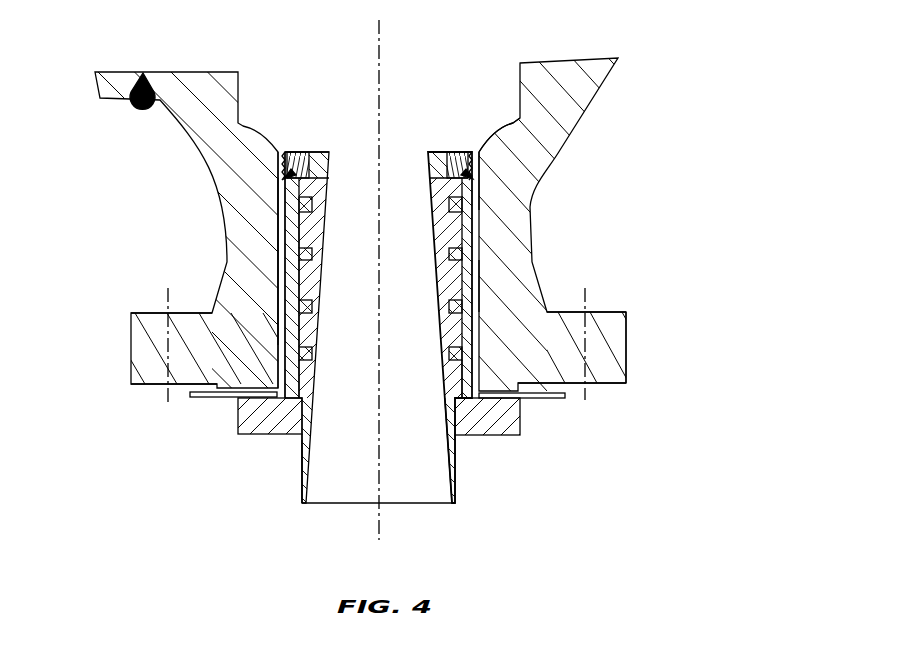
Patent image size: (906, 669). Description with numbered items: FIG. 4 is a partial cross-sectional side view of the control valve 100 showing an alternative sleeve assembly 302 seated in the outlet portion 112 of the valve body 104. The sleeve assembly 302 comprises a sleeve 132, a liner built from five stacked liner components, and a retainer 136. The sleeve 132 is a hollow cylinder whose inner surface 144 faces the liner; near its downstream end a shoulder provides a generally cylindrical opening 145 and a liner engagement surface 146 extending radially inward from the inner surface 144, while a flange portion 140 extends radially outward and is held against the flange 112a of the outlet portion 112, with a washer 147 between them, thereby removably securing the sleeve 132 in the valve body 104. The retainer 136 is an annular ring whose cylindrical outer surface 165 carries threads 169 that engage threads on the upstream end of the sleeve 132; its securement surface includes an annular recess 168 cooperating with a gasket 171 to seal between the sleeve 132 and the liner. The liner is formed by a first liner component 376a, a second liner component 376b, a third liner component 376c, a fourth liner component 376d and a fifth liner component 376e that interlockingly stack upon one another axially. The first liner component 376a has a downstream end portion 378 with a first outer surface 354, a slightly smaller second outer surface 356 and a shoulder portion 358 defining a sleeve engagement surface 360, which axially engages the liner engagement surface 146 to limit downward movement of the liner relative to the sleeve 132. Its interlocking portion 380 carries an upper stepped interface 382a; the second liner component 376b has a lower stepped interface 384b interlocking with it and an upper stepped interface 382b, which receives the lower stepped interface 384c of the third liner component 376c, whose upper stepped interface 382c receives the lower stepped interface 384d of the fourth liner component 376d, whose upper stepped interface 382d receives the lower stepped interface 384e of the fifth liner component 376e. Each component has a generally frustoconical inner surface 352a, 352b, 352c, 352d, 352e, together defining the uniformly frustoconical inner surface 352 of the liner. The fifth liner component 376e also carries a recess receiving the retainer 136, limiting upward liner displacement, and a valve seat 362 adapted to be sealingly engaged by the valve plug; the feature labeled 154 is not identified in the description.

The control valve 100 is at (668, 167).
The valve body 104 is at (612, 75).
The outlet portion 112 is at (198, 152).
The flange 112a is at (614, 384).
The sleeve 132 is at (272, 341).
The retainer 136 is at (457, 150).
The flange portion 140 is at (488, 436).
The inner surface 144 is at (482, 284).
The cylindrical opening 145 is at (450, 420).
The liner engagement surface 146 is at (278, 390).
The washer 147 is at (566, 400).
The flange shoulder 154 is at (278, 320).
The outer surface 165 is at (281, 150).
The annular recess 168 is at (305, 162).
The threads 169 is at (486, 152).
The gasket 171 is at (482, 180).
The sleeve assembly 302 is at (528, 446).
The inner surface 352 is at (323, 418).
The frustoconical inner surface 352a is at (311, 455).
The frustoconical inner surface 352b is at (312, 352).
The frustoconical inner surface 352c is at (312, 306).
The frustoconical inner surface 352d is at (312, 252).
The frustoconical inner surface 352e is at (330, 165).
The first outer surface 354 is at (482, 370).
The second outer surface 356 is at (298, 490).
The shoulder portion 358 is at (482, 380).
The sleeve engagement surface 360 is at (521, 421).
The valve seat 362 is at (388, 148).
The first liner component 376a is at (298, 445).
The second liner component 376b is at (283, 300).
The third liner component 376c is at (283, 253).
The fourth liner component 376d is at (283, 215).
The fifth liner component 376e is at (283, 190).
The downstream end portion 378 is at (313, 500).
The interlocking portion 380 is at (458, 376).
The upper stepped interface 382a is at (452, 354).
The upper stepped interface 382b is at (452, 306).
The upper stepped interface 382c is at (452, 256).
The upper stepped interface 382d is at (452, 211).
The lower stepped interface 384b is at (306, 380).
The lower stepped interface 384c is at (306, 330).
The lower stepped interface 384d is at (306, 275).
The lower stepped interface 384e is at (310, 208).